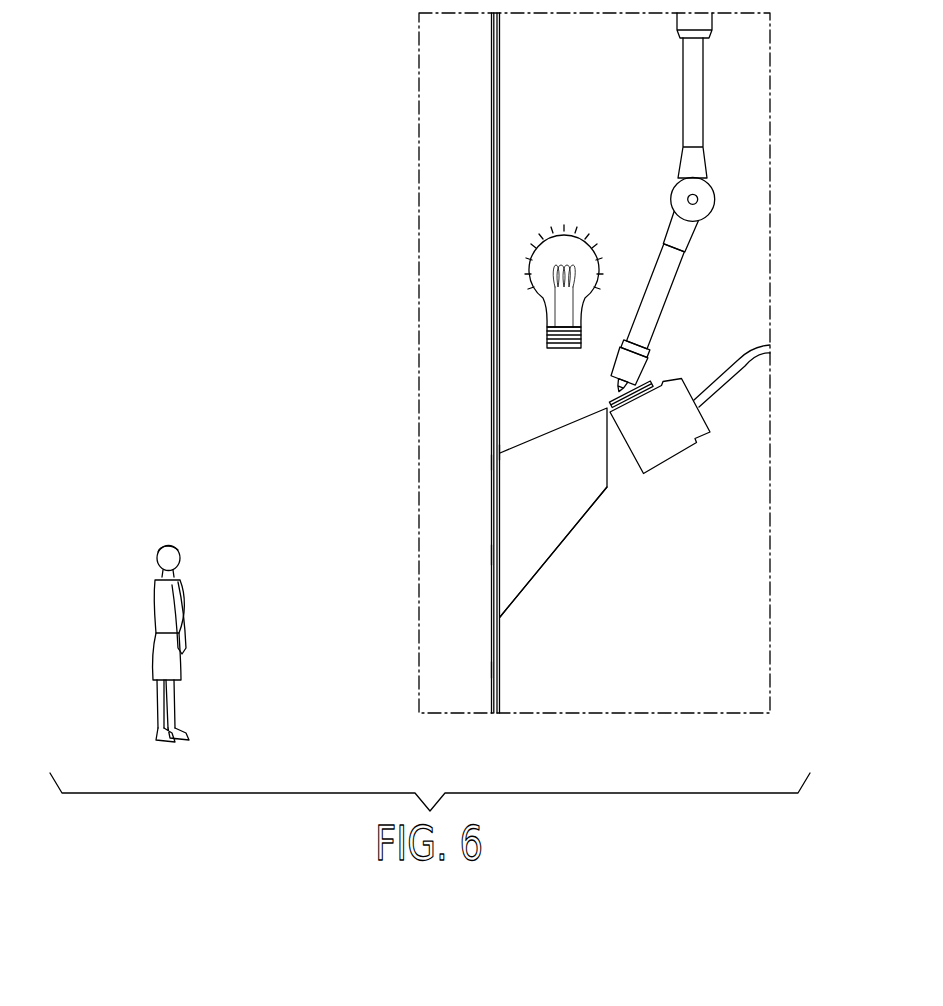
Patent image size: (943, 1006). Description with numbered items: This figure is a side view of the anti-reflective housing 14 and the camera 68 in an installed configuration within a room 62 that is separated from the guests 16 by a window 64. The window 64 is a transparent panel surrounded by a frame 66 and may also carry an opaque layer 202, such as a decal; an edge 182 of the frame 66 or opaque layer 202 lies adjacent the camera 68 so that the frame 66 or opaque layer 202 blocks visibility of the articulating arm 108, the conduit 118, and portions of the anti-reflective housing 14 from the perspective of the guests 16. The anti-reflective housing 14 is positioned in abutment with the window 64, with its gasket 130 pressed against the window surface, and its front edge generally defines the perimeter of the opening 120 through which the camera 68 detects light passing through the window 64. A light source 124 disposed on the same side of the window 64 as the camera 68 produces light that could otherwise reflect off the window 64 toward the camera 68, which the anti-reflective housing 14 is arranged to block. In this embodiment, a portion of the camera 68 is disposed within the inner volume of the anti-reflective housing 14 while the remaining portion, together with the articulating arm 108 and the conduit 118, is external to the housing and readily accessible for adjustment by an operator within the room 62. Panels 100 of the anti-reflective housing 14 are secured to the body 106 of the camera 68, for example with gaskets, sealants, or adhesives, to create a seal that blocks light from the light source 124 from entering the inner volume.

The anti-reflective housing 14 is at (529, 585).
The guests 16 is at (160, 546).
The room 62 is at (573, 110).
The window 64 is at (496, 670).
The frame 66 is at (403, 363).
The camera 68 is at (708, 446).
The panels 100 is at (555, 554).
The body 106 is at (657, 457).
The articulating arm 108 is at (690, 70).
The conduit 118 is at (733, 372).
The opening 120 is at (480, 556).
The light source 124 is at (585, 230).
The gasket 130 is at (503, 452).
The edge 182 is at (496, 462).
The opaque layer 202 is at (495, 238).